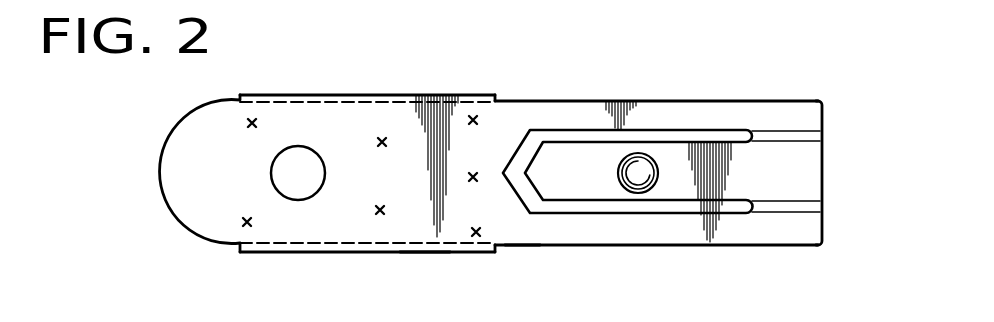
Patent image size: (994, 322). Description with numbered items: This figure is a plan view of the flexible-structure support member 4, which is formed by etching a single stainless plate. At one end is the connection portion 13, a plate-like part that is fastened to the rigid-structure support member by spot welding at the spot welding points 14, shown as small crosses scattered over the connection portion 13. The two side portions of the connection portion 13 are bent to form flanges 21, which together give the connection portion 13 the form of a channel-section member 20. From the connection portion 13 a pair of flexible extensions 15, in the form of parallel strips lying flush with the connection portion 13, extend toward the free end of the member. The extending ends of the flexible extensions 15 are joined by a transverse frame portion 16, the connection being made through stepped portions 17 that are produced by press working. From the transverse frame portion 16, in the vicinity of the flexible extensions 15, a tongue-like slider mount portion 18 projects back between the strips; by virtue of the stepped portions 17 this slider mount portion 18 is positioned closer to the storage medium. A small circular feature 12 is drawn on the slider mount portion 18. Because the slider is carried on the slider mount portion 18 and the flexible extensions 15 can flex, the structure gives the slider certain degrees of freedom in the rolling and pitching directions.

The flexible-structure support member 4 is at (521, 258).
The rivet 12 is at (658, 173).
The connection portion 13 is at (333, 212).
The spot welding points 14 is at (382, 140).
The flexible extensions 15 is at (685, 113).
The transverse frame portion 16 is at (802, 176).
The stepped portions 17 is at (795, 208).
The slider mount portion 18 is at (570, 152).
The channel-section member 20 is at (423, 258).
The flanges 21 is at (339, 94).